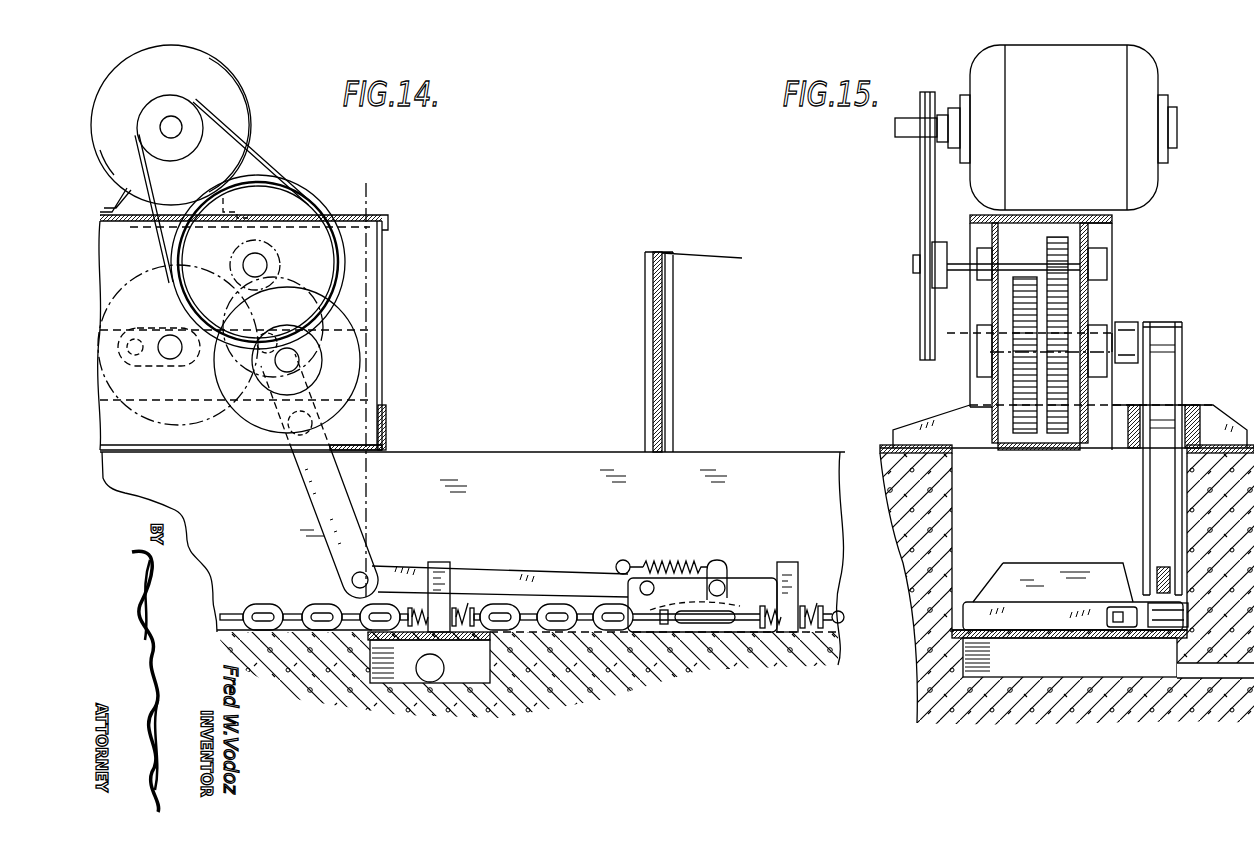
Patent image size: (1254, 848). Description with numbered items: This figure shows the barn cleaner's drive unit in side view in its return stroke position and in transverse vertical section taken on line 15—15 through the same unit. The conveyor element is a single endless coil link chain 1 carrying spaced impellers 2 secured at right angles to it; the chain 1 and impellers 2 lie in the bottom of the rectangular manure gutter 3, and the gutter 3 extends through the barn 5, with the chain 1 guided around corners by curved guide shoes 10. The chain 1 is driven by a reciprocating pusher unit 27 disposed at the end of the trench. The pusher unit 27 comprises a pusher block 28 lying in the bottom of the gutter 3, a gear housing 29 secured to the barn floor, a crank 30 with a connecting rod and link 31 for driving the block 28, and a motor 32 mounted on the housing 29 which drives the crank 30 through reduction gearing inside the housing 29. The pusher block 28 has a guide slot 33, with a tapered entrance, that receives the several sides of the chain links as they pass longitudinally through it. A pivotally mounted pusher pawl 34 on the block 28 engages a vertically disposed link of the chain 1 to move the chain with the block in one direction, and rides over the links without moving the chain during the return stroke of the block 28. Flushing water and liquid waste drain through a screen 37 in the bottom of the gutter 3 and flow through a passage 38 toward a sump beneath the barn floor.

In FIG. 14, the coil link chain 1 is at (262, 604).
In FIG. 15, the coil link chain 1 is at (1147, 604).
In FIG. 14, the impellers 2 is at (437, 560).
In FIG. 15, the impellers 2 is at (1053, 563).
In FIG. 14, the manure gutter 3 is at (517, 480).
In FIG. 15, the manure gutter 3 is at (977, 490).
In FIG. 14, the barn 5 is at (650, 291).
In FIG. 15, the curved guide shoes 10 is at (1070, 657).
In FIG. 14, the section line 15— 15 is at (392, 185).
In FIG. 14, the reciprocating pusher unit 27 is at (388, 328).
In FIG. 15, the reciprocating pusher unit 27 is at (1115, 255).
In FIG. 14, the pusher block 28 is at (746, 577).
In FIG. 14, the gear housing 29 is at (358, 290).
In FIG. 15, the gear housing 29 is at (1090, 300).
In FIG. 14, the crank 30 is at (153, 326).
In FIG. 15, the crank 30 is at (1138, 322).
In FIG. 14, the connecting rod and link 31 is at (207, 358).
In FIG. 15, the connecting rod and link 31 is at (1165, 361).
In FIG. 14, the motor 32 is at (240, 95).
In FIG. 15, the motor 32 is at (1157, 78).
In FIG. 14, the guide slot 33 is at (672, 628).
In FIG. 14, the pusher pawl 34 is at (671, 582).
In FIG. 14, the screen 37 is at (462, 641).
In FIG. 15, the screen 37 is at (1031, 640).
In FIG. 14, the passage 38 is at (422, 674).
In FIG. 15, the passage 38 is at (1213, 678).